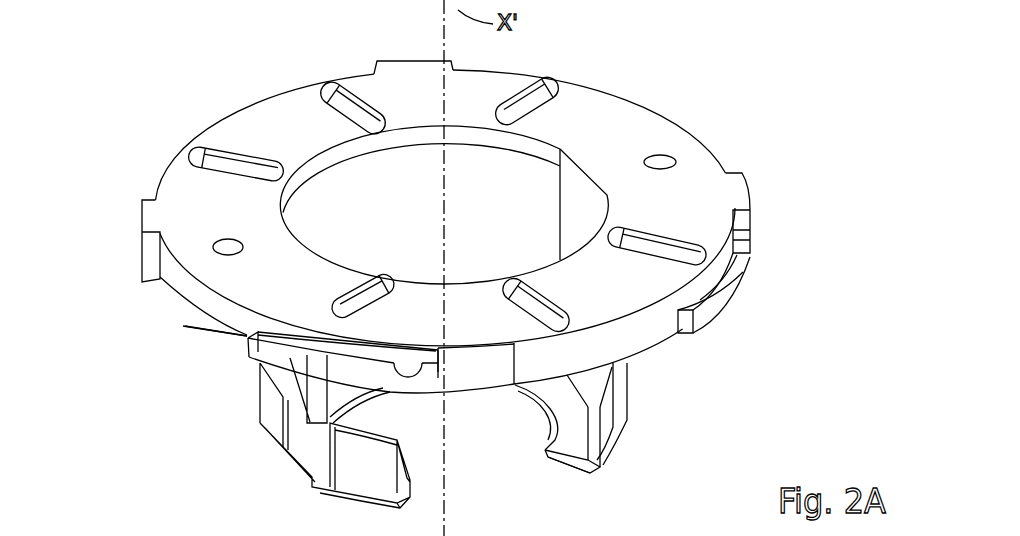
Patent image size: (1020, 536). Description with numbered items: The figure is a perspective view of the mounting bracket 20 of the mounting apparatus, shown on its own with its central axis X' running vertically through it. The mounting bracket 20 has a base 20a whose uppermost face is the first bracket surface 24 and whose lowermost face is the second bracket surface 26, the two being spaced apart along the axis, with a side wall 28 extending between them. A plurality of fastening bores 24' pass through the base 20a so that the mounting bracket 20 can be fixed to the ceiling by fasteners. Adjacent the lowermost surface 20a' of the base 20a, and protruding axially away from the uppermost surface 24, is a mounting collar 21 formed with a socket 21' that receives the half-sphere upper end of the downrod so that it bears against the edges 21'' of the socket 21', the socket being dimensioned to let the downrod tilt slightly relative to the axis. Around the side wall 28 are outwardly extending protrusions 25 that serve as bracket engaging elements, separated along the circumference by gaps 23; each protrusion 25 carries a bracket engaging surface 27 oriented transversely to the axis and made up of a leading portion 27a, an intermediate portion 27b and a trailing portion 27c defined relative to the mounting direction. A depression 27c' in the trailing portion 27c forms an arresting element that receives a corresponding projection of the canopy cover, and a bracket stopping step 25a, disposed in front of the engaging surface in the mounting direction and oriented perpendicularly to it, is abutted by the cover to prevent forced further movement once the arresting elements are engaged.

The mounting bracket 20 is at (724, 133).
The base 20a is at (638, 125).
The lowermost surface 20a' is at (467, 166).
The mounting collar 21 is at (570, 465).
The socket 21' is at (559, 477).
The edges of the socket 21'' is at (630, 399).
The gaps 23 is at (188, 300).
The first bracket surface 24 is at (193, 200).
The fastening bores 24' is at (447, 187).
The bracket engaging elements 25 is at (257, 352).
The bracket stopping step 25a is at (413, 343).
The second bracket surface 26 is at (410, 497).
The bracket engaging surface 27 is at (295, 348).
The leading portion 27a is at (185, 326).
The intermediate portion 27b is at (330, 355).
The trailing portion 27c is at (415, 372).
The depression 27c' is at (460, 414).
The side wall 28 is at (178, 275).